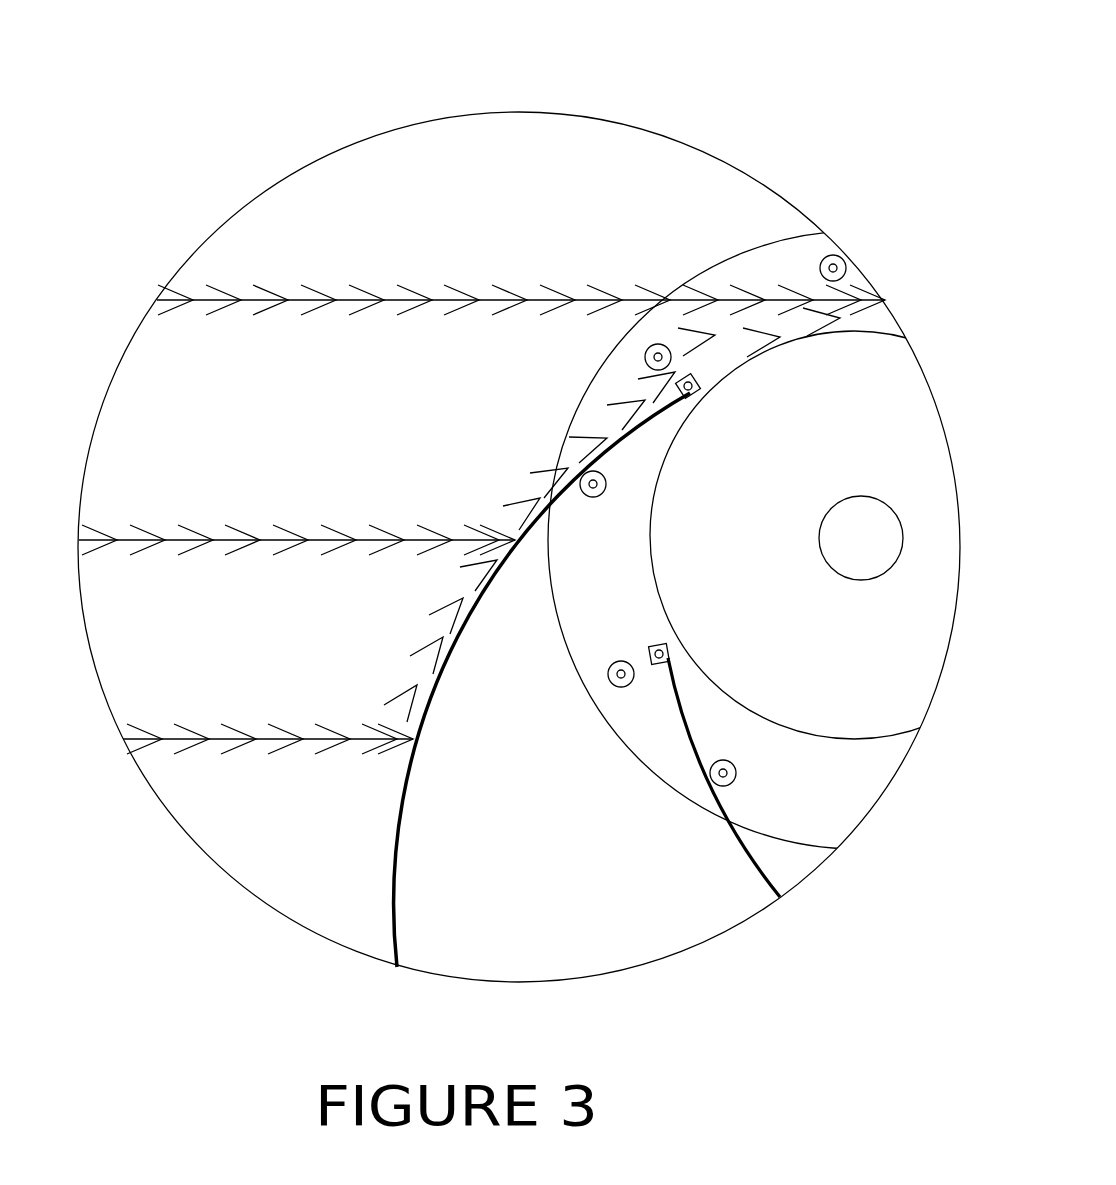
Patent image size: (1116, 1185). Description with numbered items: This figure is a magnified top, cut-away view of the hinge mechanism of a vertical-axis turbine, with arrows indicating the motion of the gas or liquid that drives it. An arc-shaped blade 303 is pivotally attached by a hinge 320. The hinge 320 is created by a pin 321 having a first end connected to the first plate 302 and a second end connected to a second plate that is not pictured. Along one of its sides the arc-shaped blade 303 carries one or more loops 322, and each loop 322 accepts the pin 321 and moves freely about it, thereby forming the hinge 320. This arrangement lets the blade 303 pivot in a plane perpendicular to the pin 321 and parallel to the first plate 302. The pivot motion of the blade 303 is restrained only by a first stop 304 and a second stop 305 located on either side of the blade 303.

The first plate 302 is at (785, 258).
The arc-shaped blade 303 is at (459, 640).
The first stop 304 is at (585, 474).
The second stop 305 is at (650, 347).
The hinge 320 is at (705, 358).
The pin 321 is at (693, 375).
The loop 322 is at (684, 374).